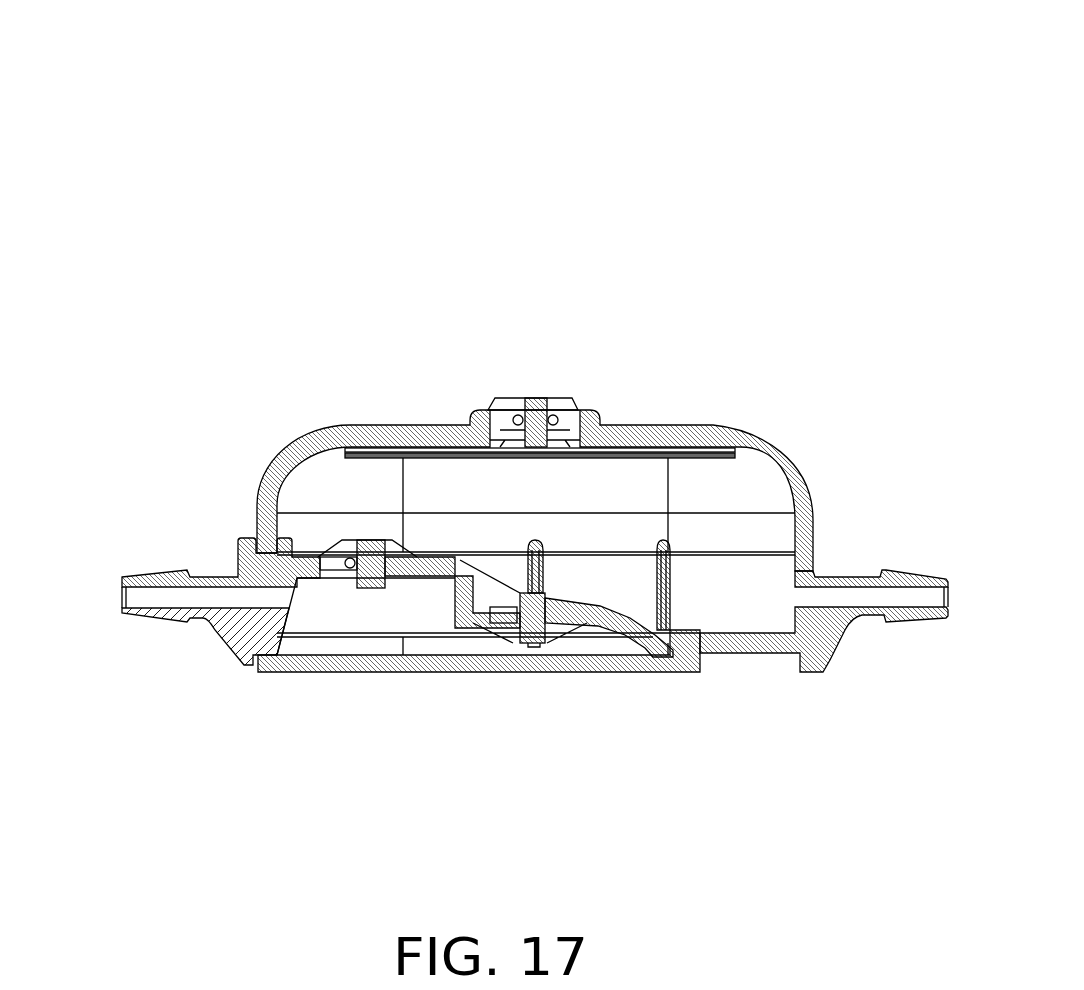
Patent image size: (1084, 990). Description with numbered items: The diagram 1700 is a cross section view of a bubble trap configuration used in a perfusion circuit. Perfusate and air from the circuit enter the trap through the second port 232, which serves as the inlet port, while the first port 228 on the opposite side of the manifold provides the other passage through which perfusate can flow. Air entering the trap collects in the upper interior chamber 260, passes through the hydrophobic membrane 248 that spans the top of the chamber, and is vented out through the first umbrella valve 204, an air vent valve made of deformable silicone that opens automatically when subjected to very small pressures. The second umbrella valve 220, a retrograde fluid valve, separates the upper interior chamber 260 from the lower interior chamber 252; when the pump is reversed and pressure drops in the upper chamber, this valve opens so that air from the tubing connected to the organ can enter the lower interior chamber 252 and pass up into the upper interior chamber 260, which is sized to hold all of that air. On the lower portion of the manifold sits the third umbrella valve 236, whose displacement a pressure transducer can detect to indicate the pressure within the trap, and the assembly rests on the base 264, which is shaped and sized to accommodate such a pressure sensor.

The diagram 1700 is at (505, 392).
The first umbrella valve 204 is at (573, 407).
The second umbrella valve 220 is at (332, 530).
The first port 228 is at (138, 575).
The second port 232 is at (898, 570).
The third umbrella valve 236 is at (582, 645).
The membrane 248 is at (703, 452).
The lower interior chamber 252 is at (387, 613).
The upper interior chamber 260 is at (710, 530).
The base 264 is at (285, 658).